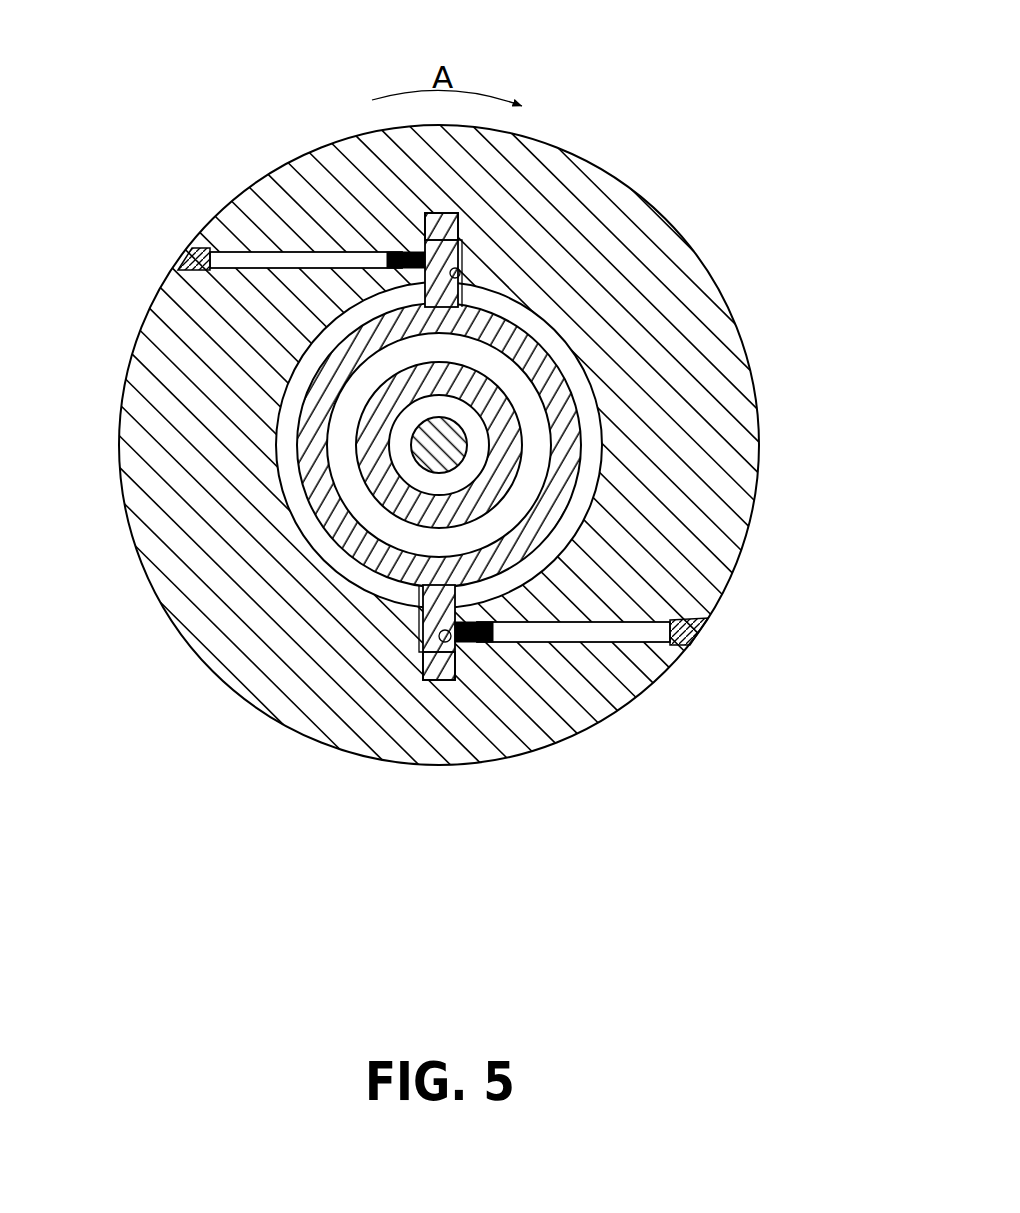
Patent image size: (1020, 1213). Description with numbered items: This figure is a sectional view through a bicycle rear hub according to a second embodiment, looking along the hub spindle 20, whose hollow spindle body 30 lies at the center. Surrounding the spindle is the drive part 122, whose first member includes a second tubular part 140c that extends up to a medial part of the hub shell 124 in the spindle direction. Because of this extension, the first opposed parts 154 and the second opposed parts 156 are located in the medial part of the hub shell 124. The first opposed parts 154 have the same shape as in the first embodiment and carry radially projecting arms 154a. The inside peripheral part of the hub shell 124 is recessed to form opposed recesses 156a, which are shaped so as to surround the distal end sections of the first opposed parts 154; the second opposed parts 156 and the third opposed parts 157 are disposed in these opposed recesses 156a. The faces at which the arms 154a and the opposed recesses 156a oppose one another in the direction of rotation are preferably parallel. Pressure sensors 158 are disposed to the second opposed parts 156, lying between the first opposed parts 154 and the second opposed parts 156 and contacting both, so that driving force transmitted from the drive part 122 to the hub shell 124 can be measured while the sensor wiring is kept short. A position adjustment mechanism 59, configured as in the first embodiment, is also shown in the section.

The hub shell 124 is at (641, 142).
The drive part 122 is at (604, 502).
The second tubular part 140c is at (566, 374).
The spindle body 30 is at (516, 490).
The hub spindle 20 is at (536, 450).
The first opposed parts 154 is at (472, 293).
The arms 154a is at (462, 216).
The third opposed parts 157 is at (401, 247).
The position adjustment mechanism 59 is at (378, 264).
The opposed recesses 156a is at (420, 241).
The second opposed parts 156 is at (462, 284).
The pressure sensors 158 is at (464, 272).